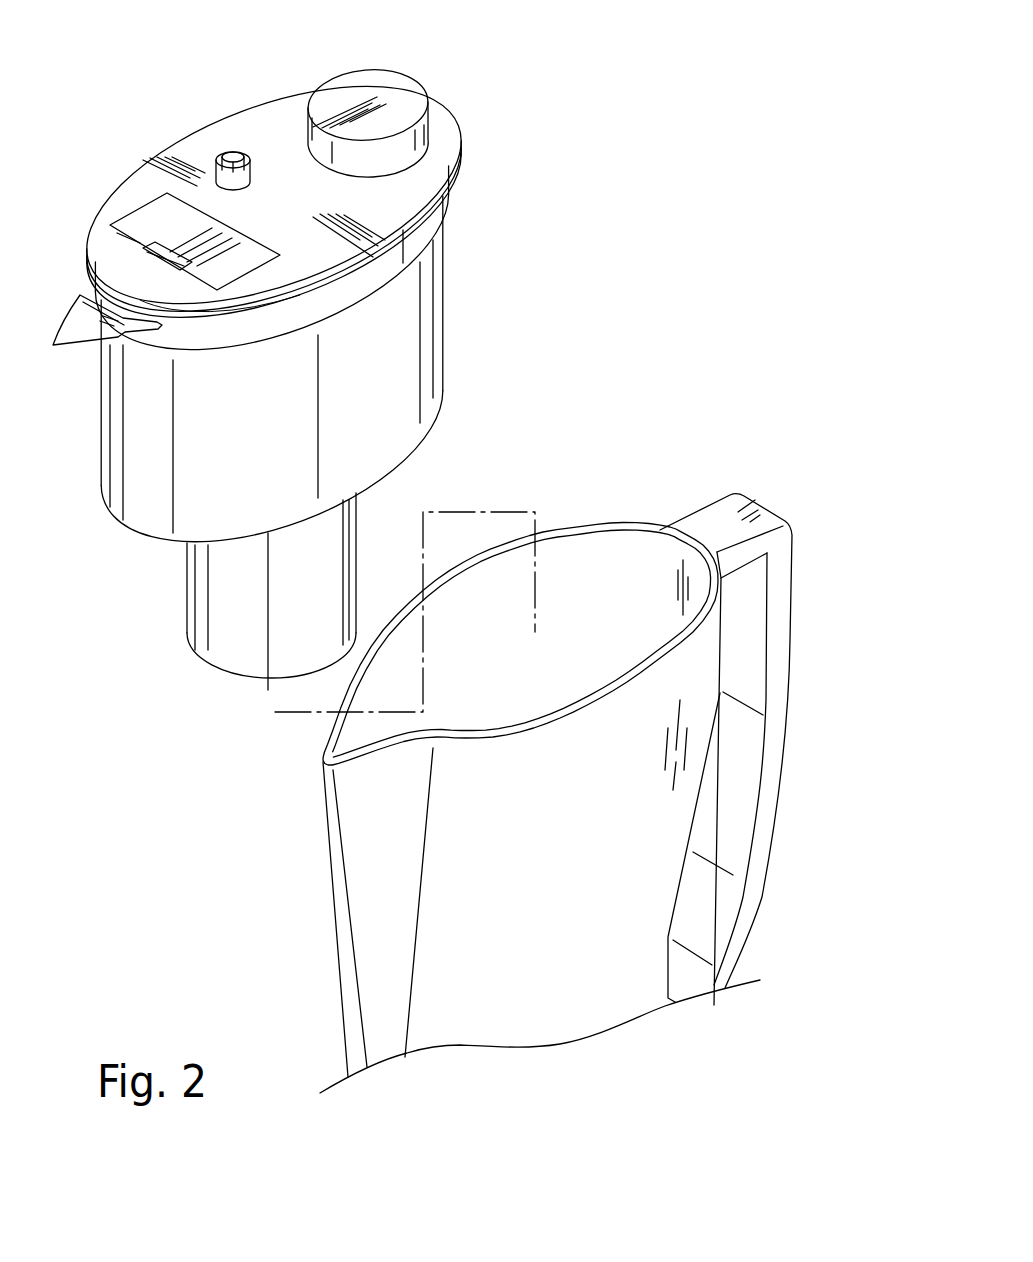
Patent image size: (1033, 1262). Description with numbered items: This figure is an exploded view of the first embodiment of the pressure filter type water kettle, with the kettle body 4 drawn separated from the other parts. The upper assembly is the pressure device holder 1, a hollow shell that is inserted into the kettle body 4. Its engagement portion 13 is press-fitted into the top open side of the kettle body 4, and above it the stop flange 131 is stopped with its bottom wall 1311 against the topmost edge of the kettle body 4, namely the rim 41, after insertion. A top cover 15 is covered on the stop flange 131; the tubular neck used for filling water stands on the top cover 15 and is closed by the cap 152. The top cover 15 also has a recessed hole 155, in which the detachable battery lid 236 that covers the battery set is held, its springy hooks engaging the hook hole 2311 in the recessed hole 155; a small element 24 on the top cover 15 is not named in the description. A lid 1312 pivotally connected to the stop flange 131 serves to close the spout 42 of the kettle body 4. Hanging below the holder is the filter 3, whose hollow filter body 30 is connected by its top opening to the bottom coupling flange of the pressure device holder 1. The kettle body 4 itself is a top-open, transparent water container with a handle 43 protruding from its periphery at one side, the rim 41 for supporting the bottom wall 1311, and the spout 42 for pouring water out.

The pressure device holder 1 is at (452, 310).
The engagement portion 13 is at (338, 302).
The stop flange 131 is at (210, 320).
The bottom wall 1311 is at (455, 182).
The lid 1312 is at (63, 338).
The top cover 15 is at (407, 220).
The cap 152 is at (432, 127).
The recessed hole 155 is at (227, 226).
The detachable battery lid 236 is at (152, 220).
The hook hole 2311 is at (147, 243).
The button 24 is at (252, 172).
The filter 3 is at (181, 618).
The hollow filter body 30 is at (184, 584).
The kettle body 4 is at (331, 976).
The rim 41 is at (464, 735).
The spout 42 is at (345, 855).
The handle 43 is at (758, 895).